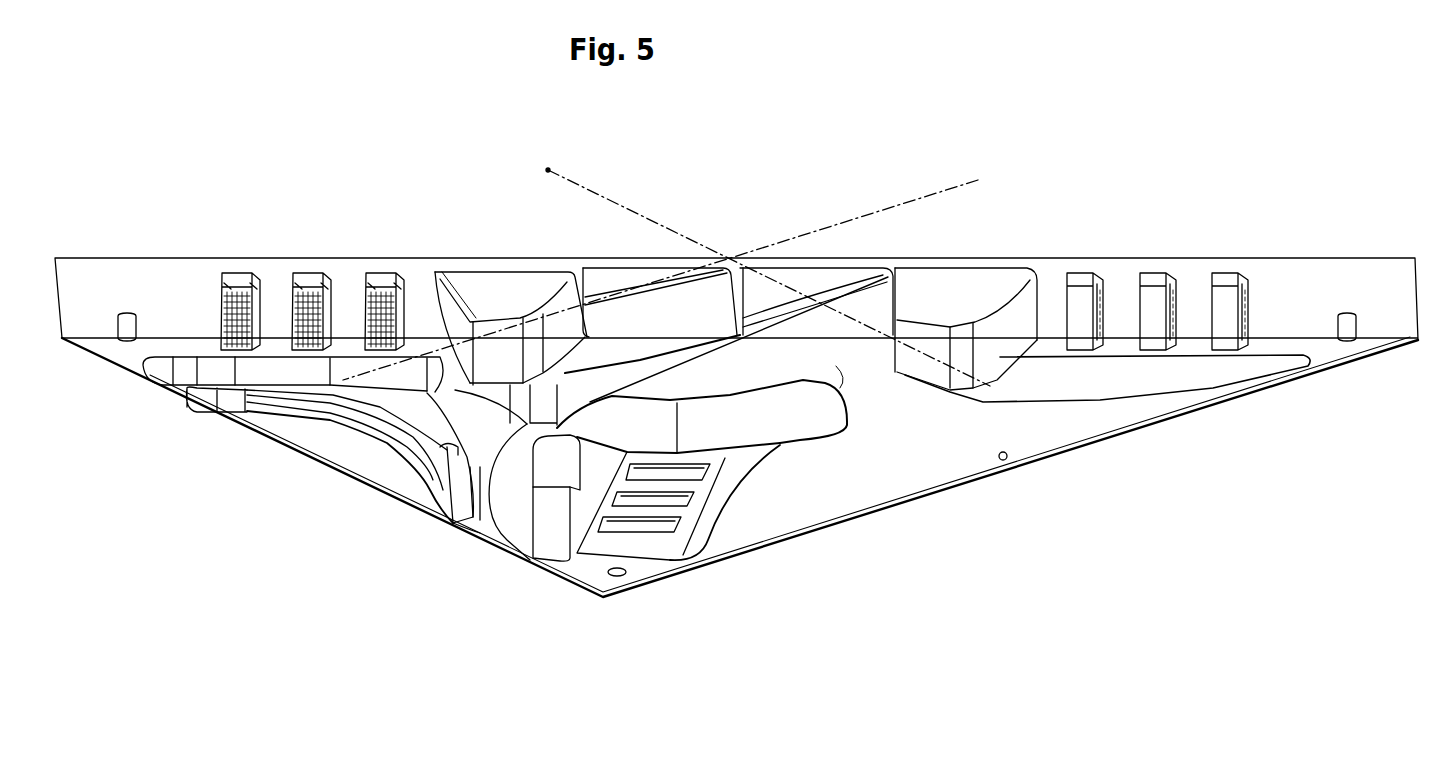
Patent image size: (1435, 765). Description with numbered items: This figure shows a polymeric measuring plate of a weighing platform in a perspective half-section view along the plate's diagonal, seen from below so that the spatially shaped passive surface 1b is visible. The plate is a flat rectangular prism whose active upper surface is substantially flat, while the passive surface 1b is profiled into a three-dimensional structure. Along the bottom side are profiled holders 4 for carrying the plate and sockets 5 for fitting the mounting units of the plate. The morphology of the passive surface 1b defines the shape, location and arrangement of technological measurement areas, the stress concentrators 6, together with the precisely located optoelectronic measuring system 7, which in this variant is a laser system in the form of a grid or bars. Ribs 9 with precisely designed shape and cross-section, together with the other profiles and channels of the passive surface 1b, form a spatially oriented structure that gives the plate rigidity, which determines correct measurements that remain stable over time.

The passive surface 1b is at (1325, 352).
The profiled holders 4 is at (375, 437).
The sockets 5 is at (1345, 318).
The stress concentrators 6 is at (683, 513).
The optoelectronic measuring system 7 is at (1155, 283).
The ribs 9 is at (525, 520).